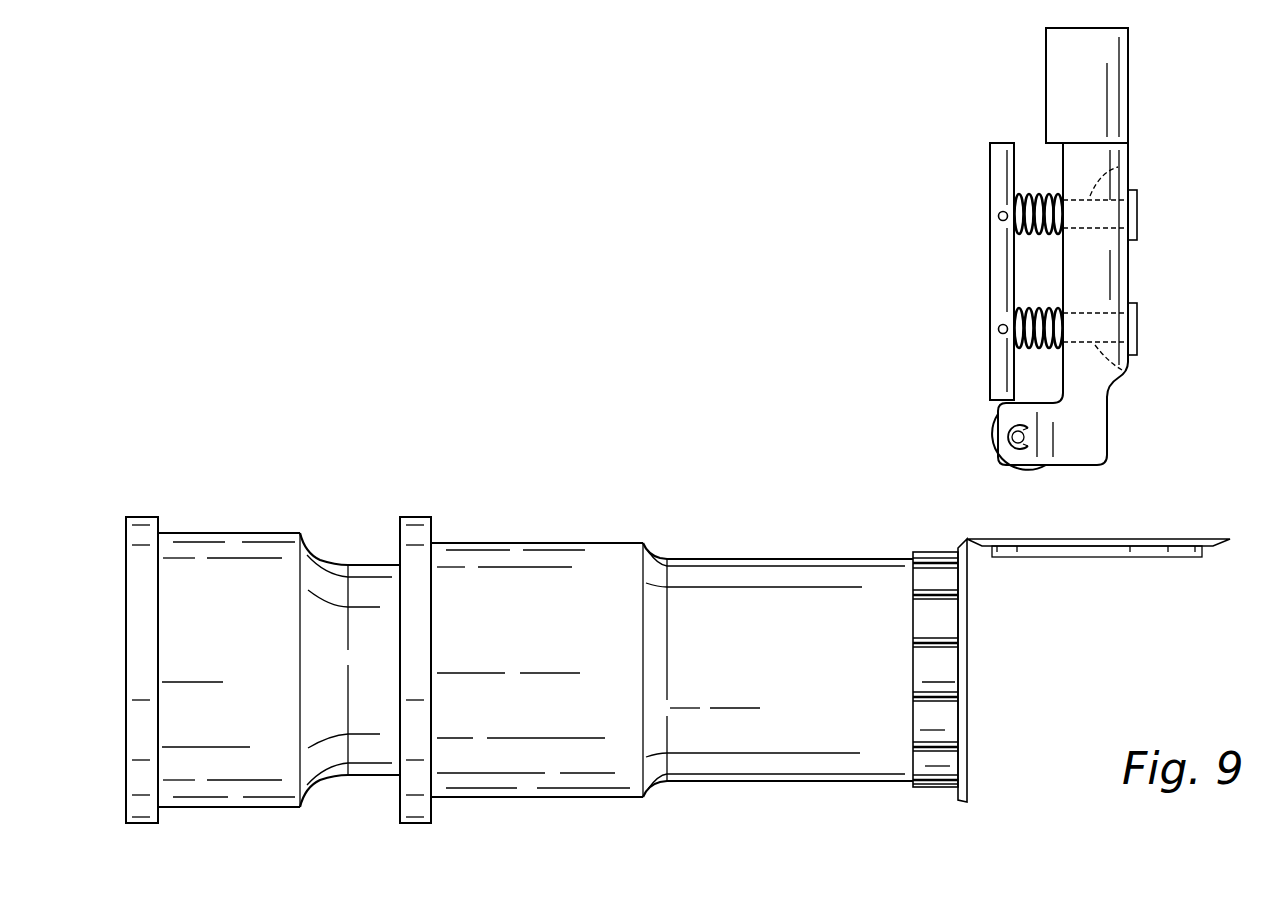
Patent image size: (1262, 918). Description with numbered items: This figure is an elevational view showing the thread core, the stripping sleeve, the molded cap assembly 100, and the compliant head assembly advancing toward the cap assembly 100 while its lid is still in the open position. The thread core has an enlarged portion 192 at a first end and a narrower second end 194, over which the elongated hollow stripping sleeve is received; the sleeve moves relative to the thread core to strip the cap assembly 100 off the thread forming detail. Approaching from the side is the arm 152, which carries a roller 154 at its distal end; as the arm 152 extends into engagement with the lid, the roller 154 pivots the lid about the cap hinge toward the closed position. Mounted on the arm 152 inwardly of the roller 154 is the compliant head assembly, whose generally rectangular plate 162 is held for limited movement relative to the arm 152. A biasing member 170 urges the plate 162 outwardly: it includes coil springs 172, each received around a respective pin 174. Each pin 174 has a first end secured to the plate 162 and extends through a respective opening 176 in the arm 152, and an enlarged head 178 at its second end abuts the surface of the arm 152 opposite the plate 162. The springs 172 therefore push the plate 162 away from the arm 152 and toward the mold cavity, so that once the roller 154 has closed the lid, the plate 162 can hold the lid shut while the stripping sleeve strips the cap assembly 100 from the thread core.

The cap assembly 100 is at (937, 801).
The arm 152 is at (1100, 265).
The roller 154 is at (984, 452).
The plate 162 is at (990, 150).
The biasing member 170 is at (1003, 350).
The springs 172 is at (1047, 192).
The pin 174 is at (1016, 202).
The opening 176 is at (1118, 167).
The enlarged head 178 is at (1137, 217).
The enlarged portion 192 is at (213, 590).
The second end 194 is at (325, 590).